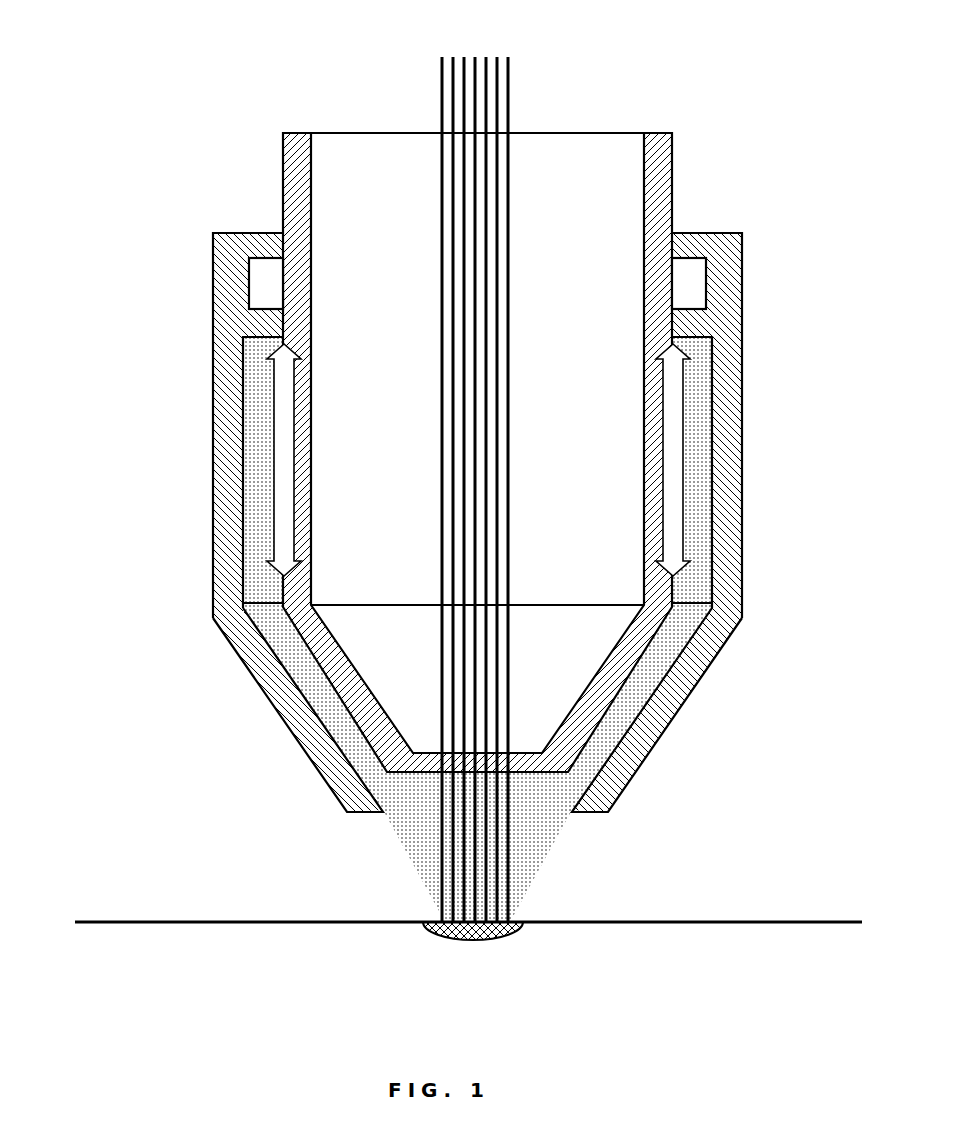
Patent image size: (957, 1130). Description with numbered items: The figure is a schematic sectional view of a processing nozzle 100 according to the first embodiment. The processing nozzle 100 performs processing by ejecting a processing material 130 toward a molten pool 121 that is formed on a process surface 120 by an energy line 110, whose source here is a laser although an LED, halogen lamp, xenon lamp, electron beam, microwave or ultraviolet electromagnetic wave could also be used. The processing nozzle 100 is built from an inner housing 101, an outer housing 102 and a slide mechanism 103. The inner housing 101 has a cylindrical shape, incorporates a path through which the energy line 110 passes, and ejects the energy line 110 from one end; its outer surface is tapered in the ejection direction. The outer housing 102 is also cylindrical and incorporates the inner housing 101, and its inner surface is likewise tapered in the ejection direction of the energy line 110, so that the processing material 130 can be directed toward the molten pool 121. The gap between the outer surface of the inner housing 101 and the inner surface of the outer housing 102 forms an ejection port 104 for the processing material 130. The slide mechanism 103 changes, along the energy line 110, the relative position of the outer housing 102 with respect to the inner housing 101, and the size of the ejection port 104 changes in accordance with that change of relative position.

The processing nozzle 100 is at (460, 472).
The inner housing 101 is at (672, 195).
The outer housing 102 is at (740, 348).
The slide mechanism 103 is at (695, 280).
The ejection port 104 is at (577, 790).
The energy line 110 is at (493, 120).
The process surface 120 is at (108, 922).
The molten pool 121 is at (507, 930).
The processing material 130 is at (532, 837).